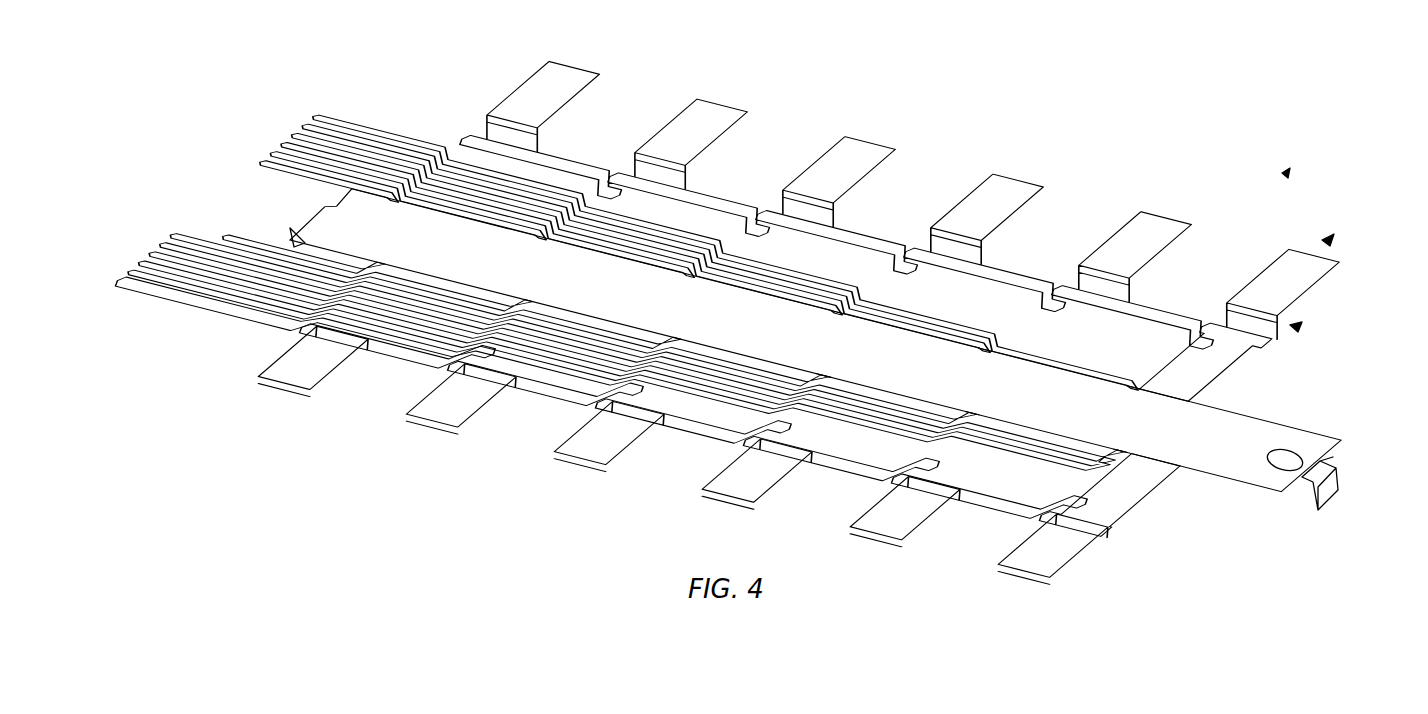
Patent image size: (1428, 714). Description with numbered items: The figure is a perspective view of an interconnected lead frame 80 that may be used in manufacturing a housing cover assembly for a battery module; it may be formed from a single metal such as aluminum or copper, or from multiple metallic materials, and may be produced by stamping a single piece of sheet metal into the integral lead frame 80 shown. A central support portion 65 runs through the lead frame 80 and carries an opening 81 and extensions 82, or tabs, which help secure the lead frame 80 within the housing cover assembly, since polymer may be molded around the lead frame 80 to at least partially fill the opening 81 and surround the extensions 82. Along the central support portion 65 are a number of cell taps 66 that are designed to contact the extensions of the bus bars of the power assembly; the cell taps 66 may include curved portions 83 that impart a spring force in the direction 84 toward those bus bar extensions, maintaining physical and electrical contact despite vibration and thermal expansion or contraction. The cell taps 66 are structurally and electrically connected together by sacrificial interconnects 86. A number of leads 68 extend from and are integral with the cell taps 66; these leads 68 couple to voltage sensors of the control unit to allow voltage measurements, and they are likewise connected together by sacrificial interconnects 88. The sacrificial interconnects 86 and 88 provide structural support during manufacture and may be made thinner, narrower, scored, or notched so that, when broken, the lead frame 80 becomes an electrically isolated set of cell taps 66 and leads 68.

The central support portion 65 is at (353, 218).
The cell taps 66 is at (588, 70).
The leads 68 is at (318, 128).
The interconnected lead frame 80 is at (1286, 173).
The opening 81 is at (1292, 450).
The extensions 82 is at (292, 235).
The curved portions 83 is at (1298, 326).
The direction 84 is at (1330, 240).
The sacrificial interconnects 86 is at (865, 240).
The sacrificial interconnects 88 is at (815, 375).